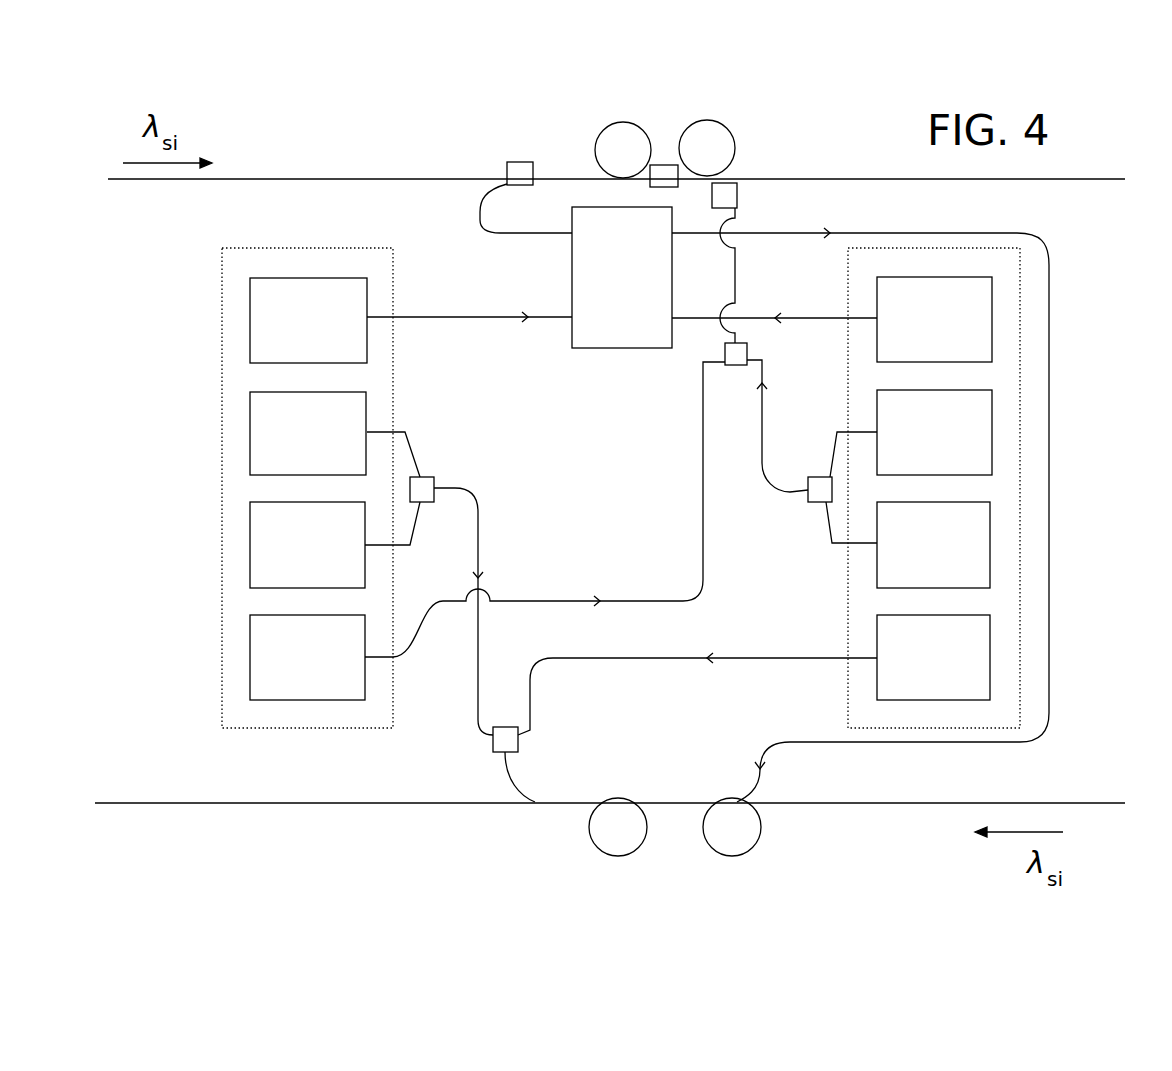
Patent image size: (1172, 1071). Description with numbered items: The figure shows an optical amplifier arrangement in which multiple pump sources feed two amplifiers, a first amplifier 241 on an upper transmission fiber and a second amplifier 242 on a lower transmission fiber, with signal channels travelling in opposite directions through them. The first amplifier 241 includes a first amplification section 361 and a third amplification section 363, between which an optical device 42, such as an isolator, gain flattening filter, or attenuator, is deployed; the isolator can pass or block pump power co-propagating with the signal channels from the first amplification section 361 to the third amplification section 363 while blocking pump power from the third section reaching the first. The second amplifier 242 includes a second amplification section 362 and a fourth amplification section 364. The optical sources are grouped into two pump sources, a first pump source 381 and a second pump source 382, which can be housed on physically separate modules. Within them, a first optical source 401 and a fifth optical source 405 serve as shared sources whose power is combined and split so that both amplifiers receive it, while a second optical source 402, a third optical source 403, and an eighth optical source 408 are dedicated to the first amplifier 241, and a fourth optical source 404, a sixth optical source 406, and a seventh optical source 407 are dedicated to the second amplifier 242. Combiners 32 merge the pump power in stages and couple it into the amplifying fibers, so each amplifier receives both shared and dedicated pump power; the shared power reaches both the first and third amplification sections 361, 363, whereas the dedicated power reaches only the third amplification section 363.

The first amplifier 241 is at (800, 126).
The second amplifier 242 is at (690, 845).
The combiner 32 is at (507, 163).
The optical device 42 is at (660, 165).
The first amplification section 361 is at (597, 142).
The second amplification section 362 is at (760, 822).
The third amplification section 363 is at (698, 122).
The fourth amplification section 364 is at (588, 827).
The first pump source 381 is at (222, 490).
The second pump source 382 is at (1020, 488).
The first optical source 401 is at (250, 290).
The second optical source 402 is at (250, 405).
The third optical source 403 is at (250, 515).
The fourth optical source 404 is at (250, 630).
The fifth optical source 405 is at (992, 302).
The sixth optical source 406 is at (992, 415).
The seventh optical source 407 is at (990, 565).
The eighth optical source 408 is at (990, 685).